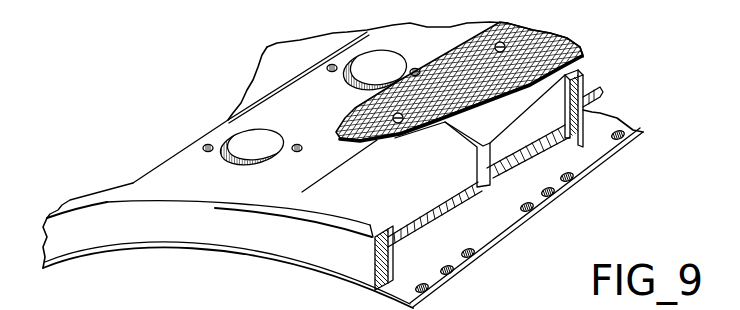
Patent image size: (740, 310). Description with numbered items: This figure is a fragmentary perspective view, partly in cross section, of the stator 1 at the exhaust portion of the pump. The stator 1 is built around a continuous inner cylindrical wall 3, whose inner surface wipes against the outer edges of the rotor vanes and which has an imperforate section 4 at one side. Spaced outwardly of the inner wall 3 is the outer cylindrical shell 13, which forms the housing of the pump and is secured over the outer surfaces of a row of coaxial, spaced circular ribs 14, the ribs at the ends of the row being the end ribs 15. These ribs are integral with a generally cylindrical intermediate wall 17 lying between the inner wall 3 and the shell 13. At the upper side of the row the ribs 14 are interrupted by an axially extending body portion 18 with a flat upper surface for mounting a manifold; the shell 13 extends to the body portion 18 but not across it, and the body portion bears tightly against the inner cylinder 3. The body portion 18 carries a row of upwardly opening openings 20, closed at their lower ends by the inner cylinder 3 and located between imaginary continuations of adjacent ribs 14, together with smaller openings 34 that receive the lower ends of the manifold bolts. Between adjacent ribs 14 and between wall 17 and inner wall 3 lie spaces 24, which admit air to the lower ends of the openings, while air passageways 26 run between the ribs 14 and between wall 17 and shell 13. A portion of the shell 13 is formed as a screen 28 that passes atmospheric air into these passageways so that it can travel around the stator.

The stator 1 is at (262, 47).
The inner cylindrical wall 3 is at (502, 227).
The imperforate section 4 is at (417, 255).
The outer cylindrical shell 13 is at (249, 92).
The circular ribs 14 is at (550, 89).
The end ribs 15 is at (330, 208).
The intermediate wall 17 is at (530, 144).
The body portion 18 is at (180, 154).
The openings 20 is at (397, 62).
The spaces 24 is at (515, 168).
The air passageways 26 is at (585, 88).
The screen 28 is at (568, 44).
The openings 34 is at (332, 73).